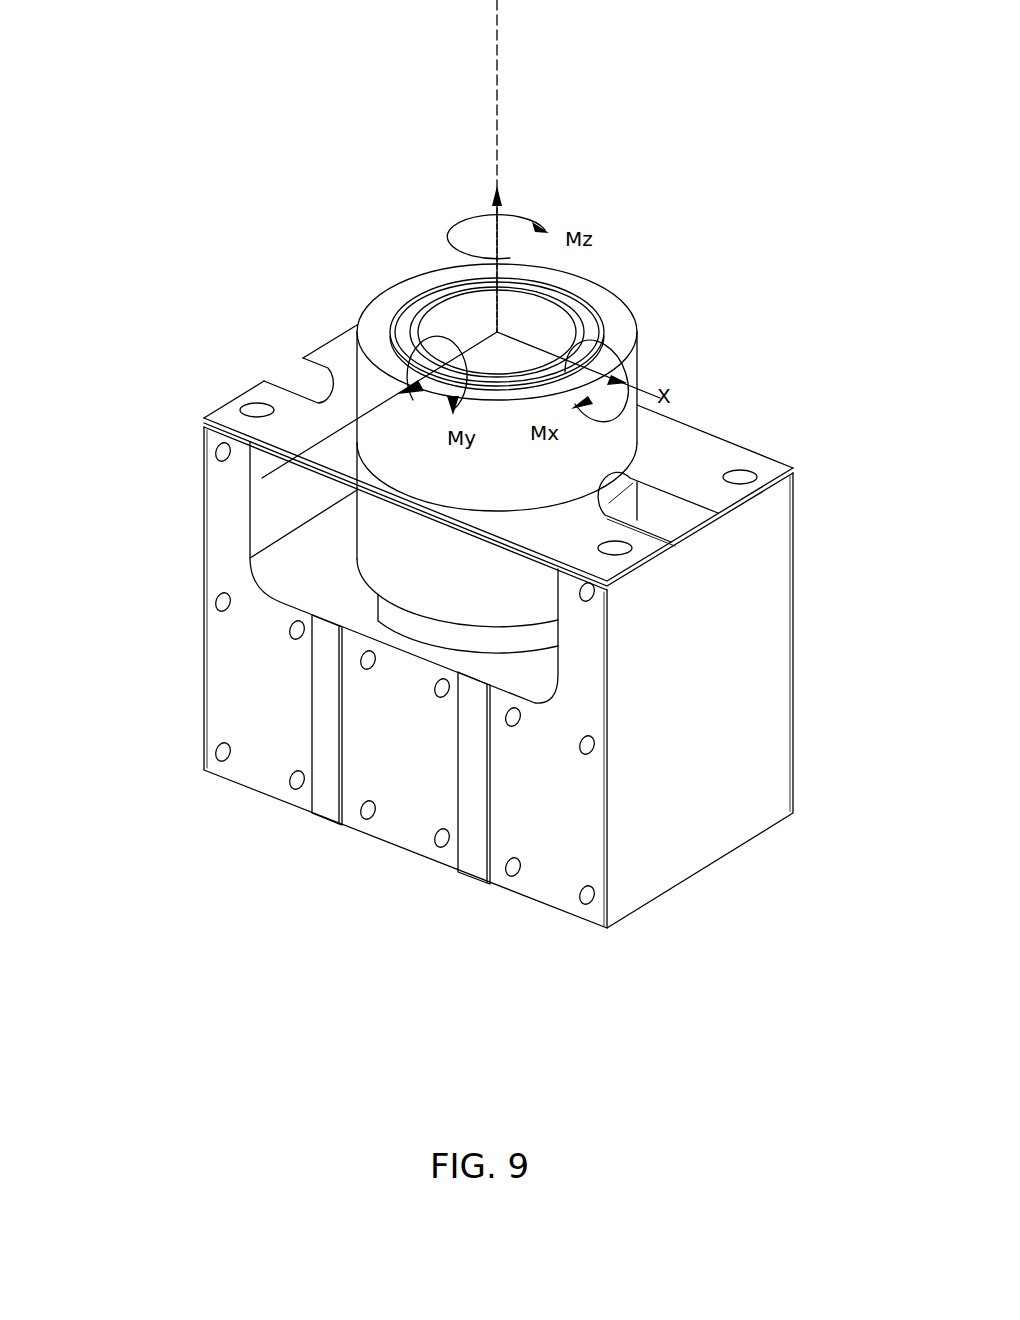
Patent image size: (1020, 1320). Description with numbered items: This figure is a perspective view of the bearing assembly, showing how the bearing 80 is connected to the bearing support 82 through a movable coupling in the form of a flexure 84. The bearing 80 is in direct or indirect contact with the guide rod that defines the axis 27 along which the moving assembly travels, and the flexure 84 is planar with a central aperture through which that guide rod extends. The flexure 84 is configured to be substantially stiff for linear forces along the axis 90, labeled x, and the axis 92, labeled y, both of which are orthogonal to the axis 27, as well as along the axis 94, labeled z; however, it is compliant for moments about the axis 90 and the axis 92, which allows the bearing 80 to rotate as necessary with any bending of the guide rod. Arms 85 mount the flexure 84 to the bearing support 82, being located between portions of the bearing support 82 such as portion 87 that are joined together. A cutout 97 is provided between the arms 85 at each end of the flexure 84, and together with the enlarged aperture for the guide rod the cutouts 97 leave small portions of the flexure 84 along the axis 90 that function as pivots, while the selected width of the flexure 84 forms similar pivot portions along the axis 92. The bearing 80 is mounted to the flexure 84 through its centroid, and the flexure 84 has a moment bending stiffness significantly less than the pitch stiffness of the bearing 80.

The axis 27 is at (505, 72).
The axis 94 is at (501, 188).
The bearing 80 is at (557, 302).
The axis 90 is at (638, 393).
The arms 85 is at (333, 398).
The cutout 97 is at (337, 395).
The flexure 84 is at (650, 548).
The bearing support 82 is at (250, 677).
The portion 87 is at (773, 742).
The axis 92 is at (262, 478).